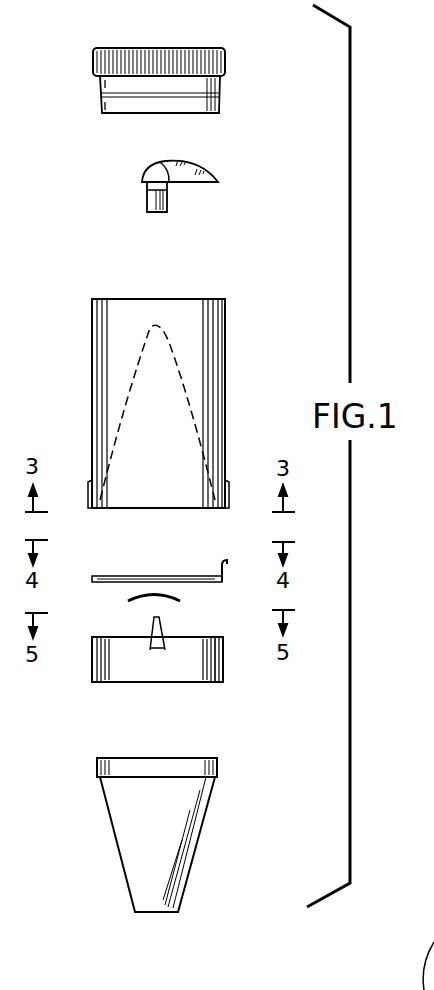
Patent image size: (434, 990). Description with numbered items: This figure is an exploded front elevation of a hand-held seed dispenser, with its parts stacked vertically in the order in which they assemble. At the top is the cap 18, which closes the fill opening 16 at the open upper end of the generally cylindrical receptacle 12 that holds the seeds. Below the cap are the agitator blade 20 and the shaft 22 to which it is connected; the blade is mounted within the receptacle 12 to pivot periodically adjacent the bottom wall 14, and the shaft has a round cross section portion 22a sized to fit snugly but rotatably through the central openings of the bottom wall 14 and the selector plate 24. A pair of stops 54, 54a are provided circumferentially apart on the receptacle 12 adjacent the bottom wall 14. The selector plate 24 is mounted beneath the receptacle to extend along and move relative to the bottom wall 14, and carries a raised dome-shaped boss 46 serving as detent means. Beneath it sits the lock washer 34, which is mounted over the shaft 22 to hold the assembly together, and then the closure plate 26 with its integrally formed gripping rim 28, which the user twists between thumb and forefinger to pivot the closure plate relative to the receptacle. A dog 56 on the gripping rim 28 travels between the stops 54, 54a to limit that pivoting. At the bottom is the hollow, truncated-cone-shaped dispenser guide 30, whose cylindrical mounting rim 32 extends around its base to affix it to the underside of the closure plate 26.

The receptacle 12 is at (180, 404).
The bottom wall 14 is at (161, 508).
The fill opening 16 is at (185, 299).
The cap 18 is at (100, 88).
The agitator blade 20 is at (195, 168).
The shaft 22 is at (147, 204).
The round cross section portion 22a is at (147, 185).
The selector plate 24 is at (148, 574).
The closure plate 26 is at (180, 646).
The gripping rim 28 is at (223, 662).
The dispenser guide 30 is at (182, 827).
The mounting rim 32 is at (218, 763).
The lock washer 34 is at (130, 600).
The boss 46 is at (208, 574).
The stop 54 is at (88, 500).
The stop 54a is at (229, 500).
The dog 56 is at (162, 622).